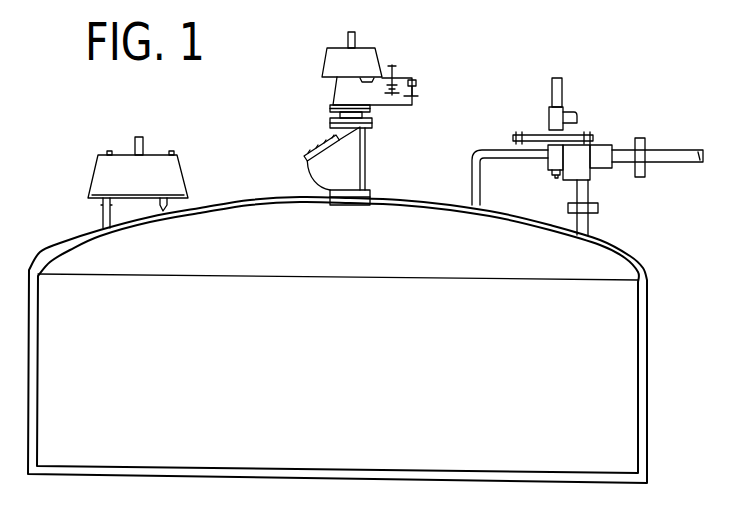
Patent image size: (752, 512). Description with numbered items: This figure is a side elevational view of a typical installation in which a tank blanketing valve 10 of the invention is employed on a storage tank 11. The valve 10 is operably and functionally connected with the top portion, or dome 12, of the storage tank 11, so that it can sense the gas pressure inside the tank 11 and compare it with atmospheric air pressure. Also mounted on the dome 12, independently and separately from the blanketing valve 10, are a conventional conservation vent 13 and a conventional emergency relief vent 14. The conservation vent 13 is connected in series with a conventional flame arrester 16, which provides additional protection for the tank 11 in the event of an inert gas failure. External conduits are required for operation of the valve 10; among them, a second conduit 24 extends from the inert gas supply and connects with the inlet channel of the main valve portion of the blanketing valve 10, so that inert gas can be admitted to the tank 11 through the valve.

The tank blanketing valve 10 is at (618, 135).
The storage tank 11 is at (360, 390).
The dome 12 is at (448, 203).
The conservation vent 13 is at (378, 119).
The emergency relief vent 14 is at (112, 153).
The flame arrester 16 is at (308, 150).
The second conduit 24 is at (632, 165).